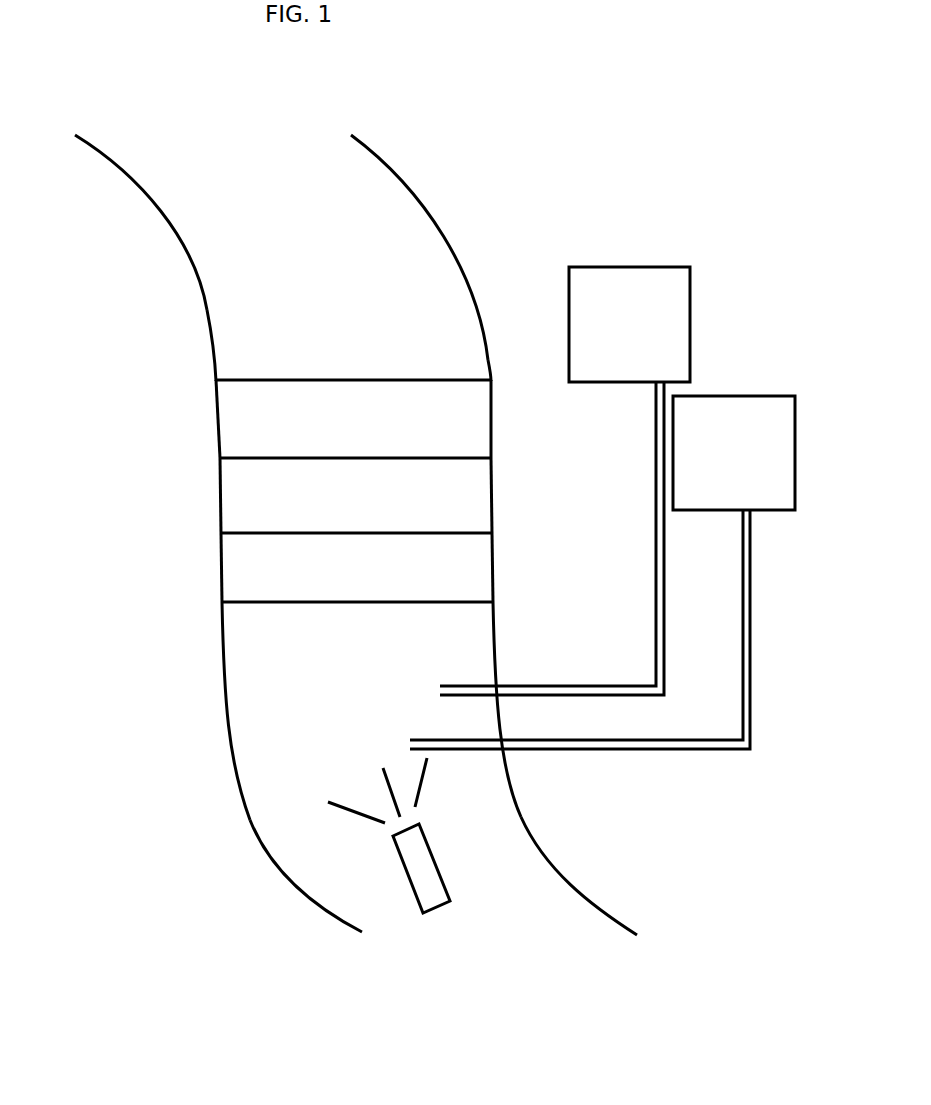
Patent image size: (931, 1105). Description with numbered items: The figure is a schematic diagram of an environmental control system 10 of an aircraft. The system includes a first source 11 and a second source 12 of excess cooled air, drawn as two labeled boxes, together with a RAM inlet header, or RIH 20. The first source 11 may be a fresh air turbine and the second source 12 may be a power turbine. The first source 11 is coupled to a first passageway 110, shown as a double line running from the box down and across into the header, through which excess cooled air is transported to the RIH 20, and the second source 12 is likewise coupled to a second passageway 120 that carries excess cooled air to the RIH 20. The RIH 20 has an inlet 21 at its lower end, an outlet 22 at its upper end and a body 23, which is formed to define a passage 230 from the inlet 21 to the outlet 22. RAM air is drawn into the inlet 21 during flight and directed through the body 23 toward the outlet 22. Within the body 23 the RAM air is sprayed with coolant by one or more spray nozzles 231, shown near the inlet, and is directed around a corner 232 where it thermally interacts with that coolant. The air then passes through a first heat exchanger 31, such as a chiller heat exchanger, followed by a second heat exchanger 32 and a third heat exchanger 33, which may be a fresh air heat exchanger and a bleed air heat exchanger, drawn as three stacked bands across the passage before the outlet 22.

The environmental control system 10 is at (526, 218).
The outlet 22 is at (262, 145).
The passage 230 is at (203, 297).
The third heat exchanger 33 is at (265, 410).
The second heat exchanger 32 is at (267, 483).
The first heat exchanger 31 is at (272, 568).
The body 23 is at (227, 746).
The RIH 20 is at (337, 740).
The spray nozzles 231 is at (418, 863).
The corner 232 is at (500, 676).
The inlet 21 is at (490, 939).
The first source 11 is at (643, 372).
The second source 12 is at (746, 499).
The first passageway 110 is at (655, 517).
The second passageway 120 is at (698, 750).